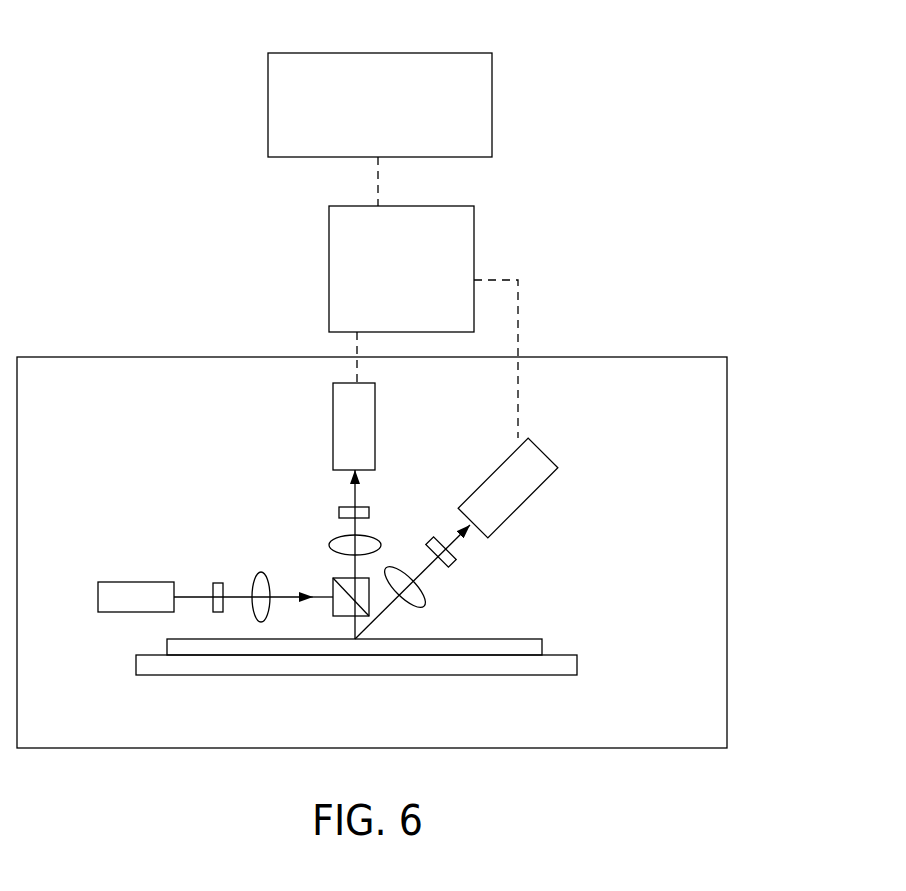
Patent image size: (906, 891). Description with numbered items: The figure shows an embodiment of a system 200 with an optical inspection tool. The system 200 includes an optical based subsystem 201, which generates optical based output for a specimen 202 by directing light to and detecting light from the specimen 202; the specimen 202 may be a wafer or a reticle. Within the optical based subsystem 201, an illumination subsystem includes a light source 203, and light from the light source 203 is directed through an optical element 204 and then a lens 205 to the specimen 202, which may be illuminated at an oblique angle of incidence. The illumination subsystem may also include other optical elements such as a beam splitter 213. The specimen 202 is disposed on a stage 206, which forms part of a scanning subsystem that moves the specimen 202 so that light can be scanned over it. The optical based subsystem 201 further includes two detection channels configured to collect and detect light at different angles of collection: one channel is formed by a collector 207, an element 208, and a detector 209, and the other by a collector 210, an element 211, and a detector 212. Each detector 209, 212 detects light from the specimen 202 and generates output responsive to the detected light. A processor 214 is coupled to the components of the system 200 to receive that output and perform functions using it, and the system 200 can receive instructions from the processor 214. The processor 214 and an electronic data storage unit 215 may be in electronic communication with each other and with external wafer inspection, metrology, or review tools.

The system 200 is at (156, 118).
The optical based subsystem 201 is at (727, 376).
The specimen 202 is at (167, 640).
The light source 203 is at (108, 582).
The optical element 204 is at (217, 582).
The lens 205 is at (260, 573).
The stage 206 is at (137, 668).
The collector 207 is at (332, 538).
The element 208 is at (340, 507).
The detector 209 is at (333, 430).
The collector 210 is at (420, 603).
The element 211 is at (447, 565).
The detector 212 is at (540, 487).
The beam splitter 213 is at (348, 577).
The processor 214 is at (401, 269).
The electronic data storage unit 215 is at (380, 105).